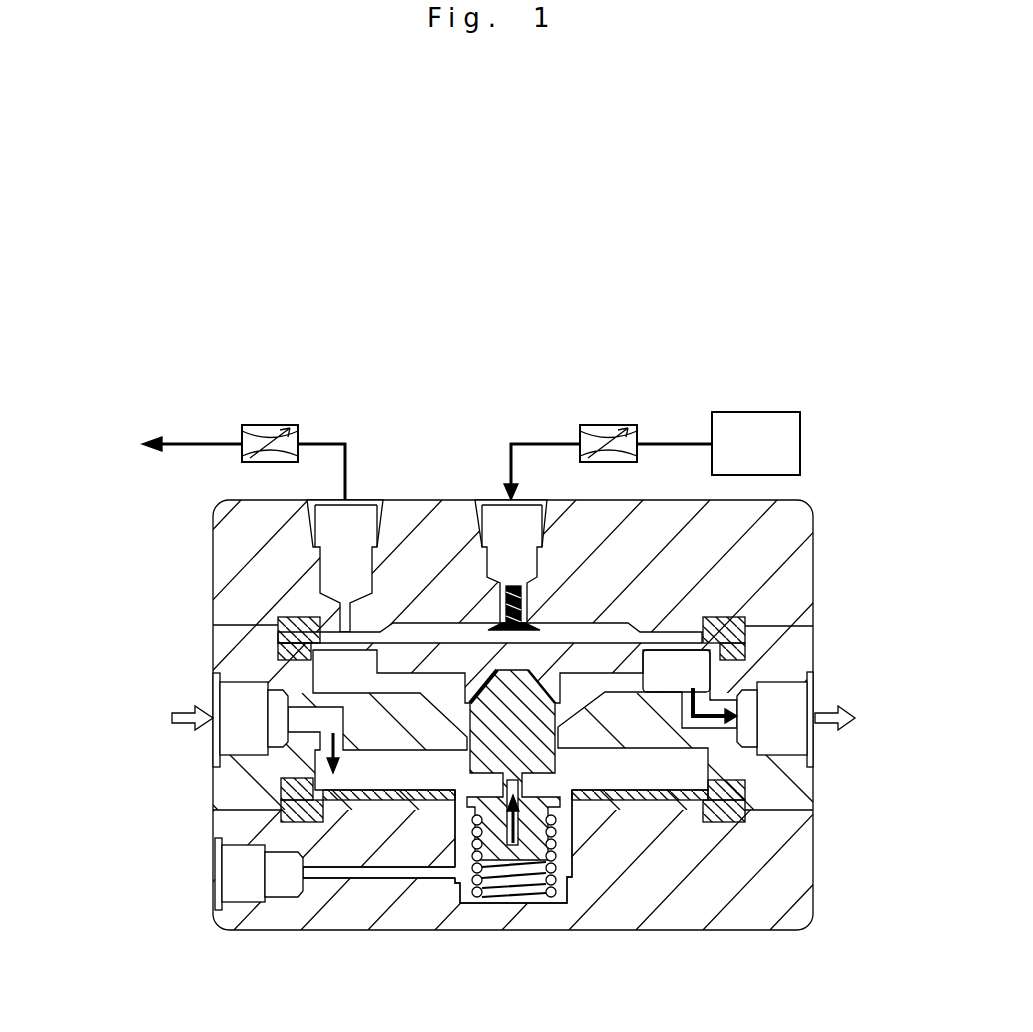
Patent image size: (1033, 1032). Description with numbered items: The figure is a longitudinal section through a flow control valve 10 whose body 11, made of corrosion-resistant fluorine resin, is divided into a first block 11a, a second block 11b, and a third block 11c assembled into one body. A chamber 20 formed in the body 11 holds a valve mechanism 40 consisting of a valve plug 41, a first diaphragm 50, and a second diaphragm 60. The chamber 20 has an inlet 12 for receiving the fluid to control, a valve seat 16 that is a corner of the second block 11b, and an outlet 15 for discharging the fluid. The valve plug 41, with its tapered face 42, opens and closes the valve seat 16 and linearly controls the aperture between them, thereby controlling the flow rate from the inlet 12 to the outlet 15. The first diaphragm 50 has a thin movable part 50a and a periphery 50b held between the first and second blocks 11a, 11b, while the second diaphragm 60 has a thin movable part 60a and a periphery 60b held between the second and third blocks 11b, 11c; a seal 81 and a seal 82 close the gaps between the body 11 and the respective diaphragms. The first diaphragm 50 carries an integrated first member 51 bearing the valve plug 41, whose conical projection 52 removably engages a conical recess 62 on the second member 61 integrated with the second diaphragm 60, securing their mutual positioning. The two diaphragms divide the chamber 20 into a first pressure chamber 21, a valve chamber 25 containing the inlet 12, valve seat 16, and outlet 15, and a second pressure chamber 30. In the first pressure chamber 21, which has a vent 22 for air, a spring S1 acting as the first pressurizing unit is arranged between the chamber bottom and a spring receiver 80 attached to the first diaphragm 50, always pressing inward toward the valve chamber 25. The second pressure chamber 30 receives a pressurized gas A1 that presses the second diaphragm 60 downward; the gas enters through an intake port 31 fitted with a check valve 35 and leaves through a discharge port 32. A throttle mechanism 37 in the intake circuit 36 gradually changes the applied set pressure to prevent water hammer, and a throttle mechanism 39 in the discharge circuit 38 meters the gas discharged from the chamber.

The flow control valve 10 is at (697, 337).
The body 11 is at (815, 548).
The first block 11a is at (228, 920).
The second block 11b is at (220, 800).
The third block 11c is at (235, 540).
The inlet 12 is at (313, 690).
The outlet 15 is at (745, 713).
The valve seat 16 is at (465, 735).
The chamber 20 is at (301, 713).
The first pressure chamber 21 is at (450, 867).
The vent 22 is at (383, 872).
The valve chamber 25 is at (770, 772).
The second pressure chamber 30 is at (432, 640).
The intake port 31 is at (523, 558).
The discharge port 32 is at (357, 556).
The check valve 35 is at (530, 625).
The intake circuit 36 is at (546, 444).
The throttle mechanism 37 is at (600, 432).
The discharge circuit 38 is at (330, 444).
The throttle mechanism 39 is at (258, 432).
The valve mechanism 40 is at (615, 640).
The valve plug 41 is at (560, 768).
The tapered face 42 is at (453, 737).
The first diaphragm 50 is at (650, 792).
The thin movable part 50a is at (572, 840).
The periphery 50b is at (745, 785).
The first member 51 is at (548, 720).
The conical projection 52 is at (498, 690).
The second diaphragm 60 is at (380, 650).
The thin movable part 60a is at (670, 650).
The periphery 60b is at (740, 655).
The second member 61 is at (548, 685).
The conical recess 62 is at (490, 682).
The spring receiver 80 is at (463, 810).
The seal 81 is at (313, 822).
The seal 82 is at (715, 628).
The pressurized gas A1 is at (745, 435).
The spring S1 is at (550, 900).